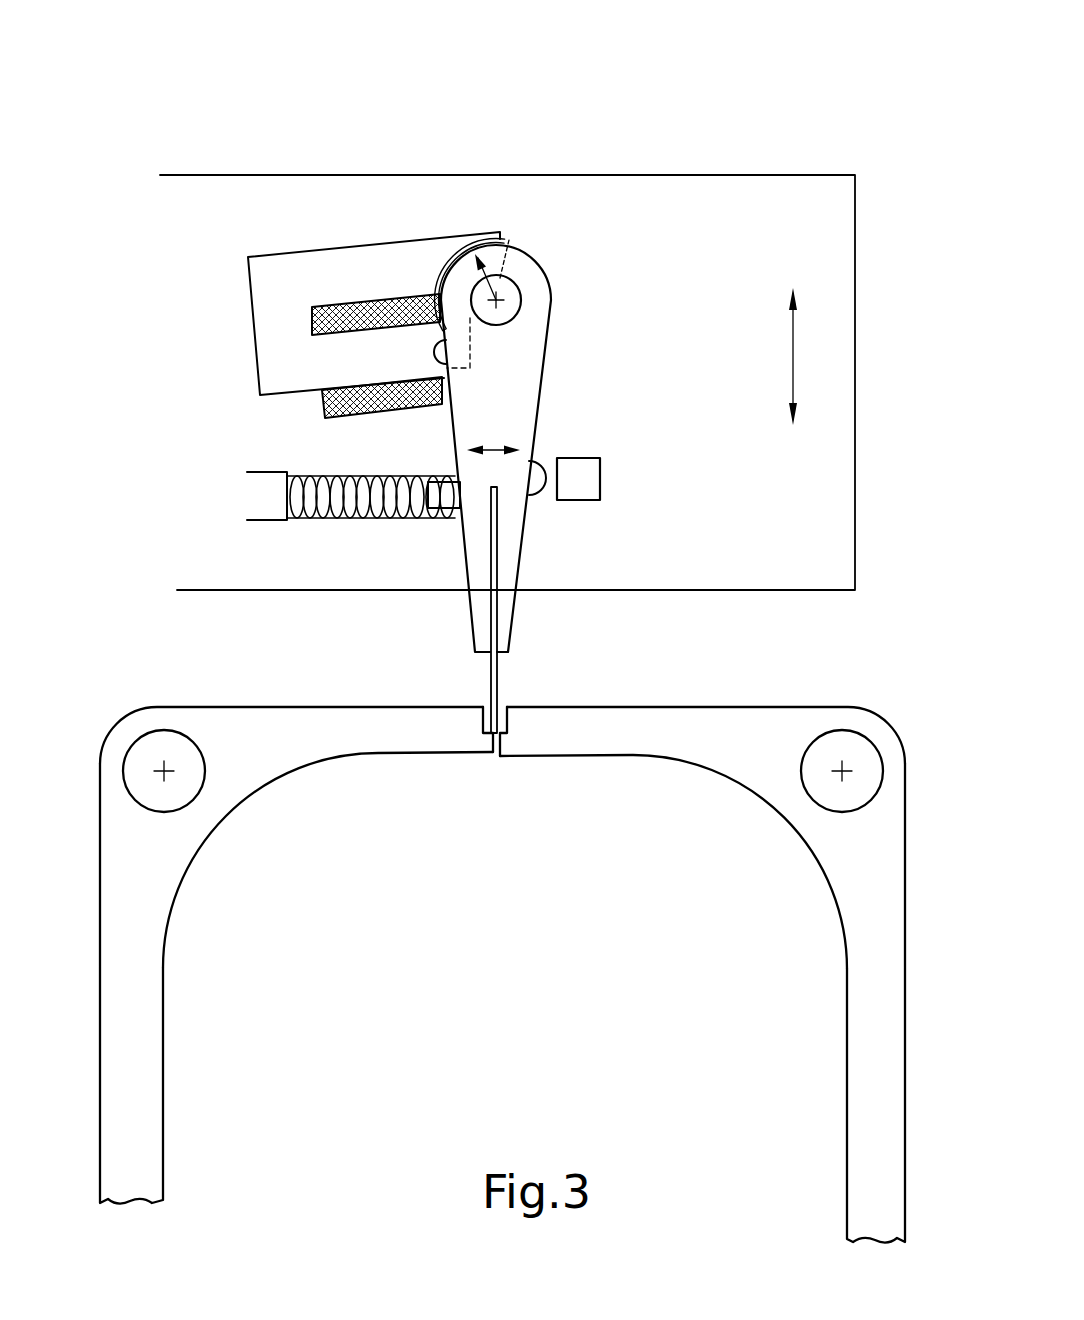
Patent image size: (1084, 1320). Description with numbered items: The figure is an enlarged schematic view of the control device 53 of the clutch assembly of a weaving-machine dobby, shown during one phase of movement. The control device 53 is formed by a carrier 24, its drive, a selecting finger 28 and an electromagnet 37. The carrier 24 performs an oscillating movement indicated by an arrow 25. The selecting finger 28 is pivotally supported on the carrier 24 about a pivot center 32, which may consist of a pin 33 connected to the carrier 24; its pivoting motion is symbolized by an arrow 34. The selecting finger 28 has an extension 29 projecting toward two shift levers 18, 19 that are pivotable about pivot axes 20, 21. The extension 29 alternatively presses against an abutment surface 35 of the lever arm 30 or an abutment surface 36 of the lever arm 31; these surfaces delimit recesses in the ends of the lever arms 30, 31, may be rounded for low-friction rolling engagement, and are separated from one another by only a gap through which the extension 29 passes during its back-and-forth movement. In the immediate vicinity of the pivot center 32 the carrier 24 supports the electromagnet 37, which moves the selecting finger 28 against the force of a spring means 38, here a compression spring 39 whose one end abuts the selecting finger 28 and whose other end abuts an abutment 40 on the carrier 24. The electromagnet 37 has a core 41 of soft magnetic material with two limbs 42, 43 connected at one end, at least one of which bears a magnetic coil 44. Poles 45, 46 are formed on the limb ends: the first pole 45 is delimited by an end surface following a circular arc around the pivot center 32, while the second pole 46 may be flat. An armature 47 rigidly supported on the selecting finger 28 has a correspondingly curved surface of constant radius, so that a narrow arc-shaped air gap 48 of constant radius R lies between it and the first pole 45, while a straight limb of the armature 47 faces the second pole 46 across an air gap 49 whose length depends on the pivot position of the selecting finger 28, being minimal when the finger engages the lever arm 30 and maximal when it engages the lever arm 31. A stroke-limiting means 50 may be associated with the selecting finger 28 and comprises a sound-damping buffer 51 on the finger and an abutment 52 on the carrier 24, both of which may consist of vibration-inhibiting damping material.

The shift lever 18 is at (137, 1055).
The shift lever 19 is at (873, 1053).
The pivot axis 20 is at (158, 750).
The pivot axis 21 is at (841, 748).
The carrier 24 is at (717, 194).
The arrow 25 is at (793, 355).
The selecting finger 28 is at (512, 562).
The extension 29 is at (498, 672).
The lever arm 30 is at (378, 733).
The lever arm 31 is at (610, 737).
The pivot center 32 is at (498, 299).
The pin 33 is at (512, 308).
The arrow 34 is at (503, 445).
The abutment surface 35 is at (489, 736).
The abutment surface 36 is at (505, 735).
The electromagnet 37 is at (395, 220).
The spring means 38 is at (373, 552).
The compression spring 39 is at (345, 519).
The abutment 40 is at (262, 472).
The core 41 is at (230, 395).
The limb 42 is at (387, 279).
The limb 43 is at (366, 368).
The magnetic coil 44 is at (368, 416).
The first pole 45 is at (459, 256).
The second pole 46 is at (446, 370).
The armature 47 is at (511, 244).
The air gap 48 is at (439, 248).
The air gap 49 is at (460, 347).
The stroke-limiting means 50 is at (609, 430).
The sound-damping buffer 51 is at (536, 490).
The abutment 52 is at (587, 477).
The control device 53 is at (652, 100).